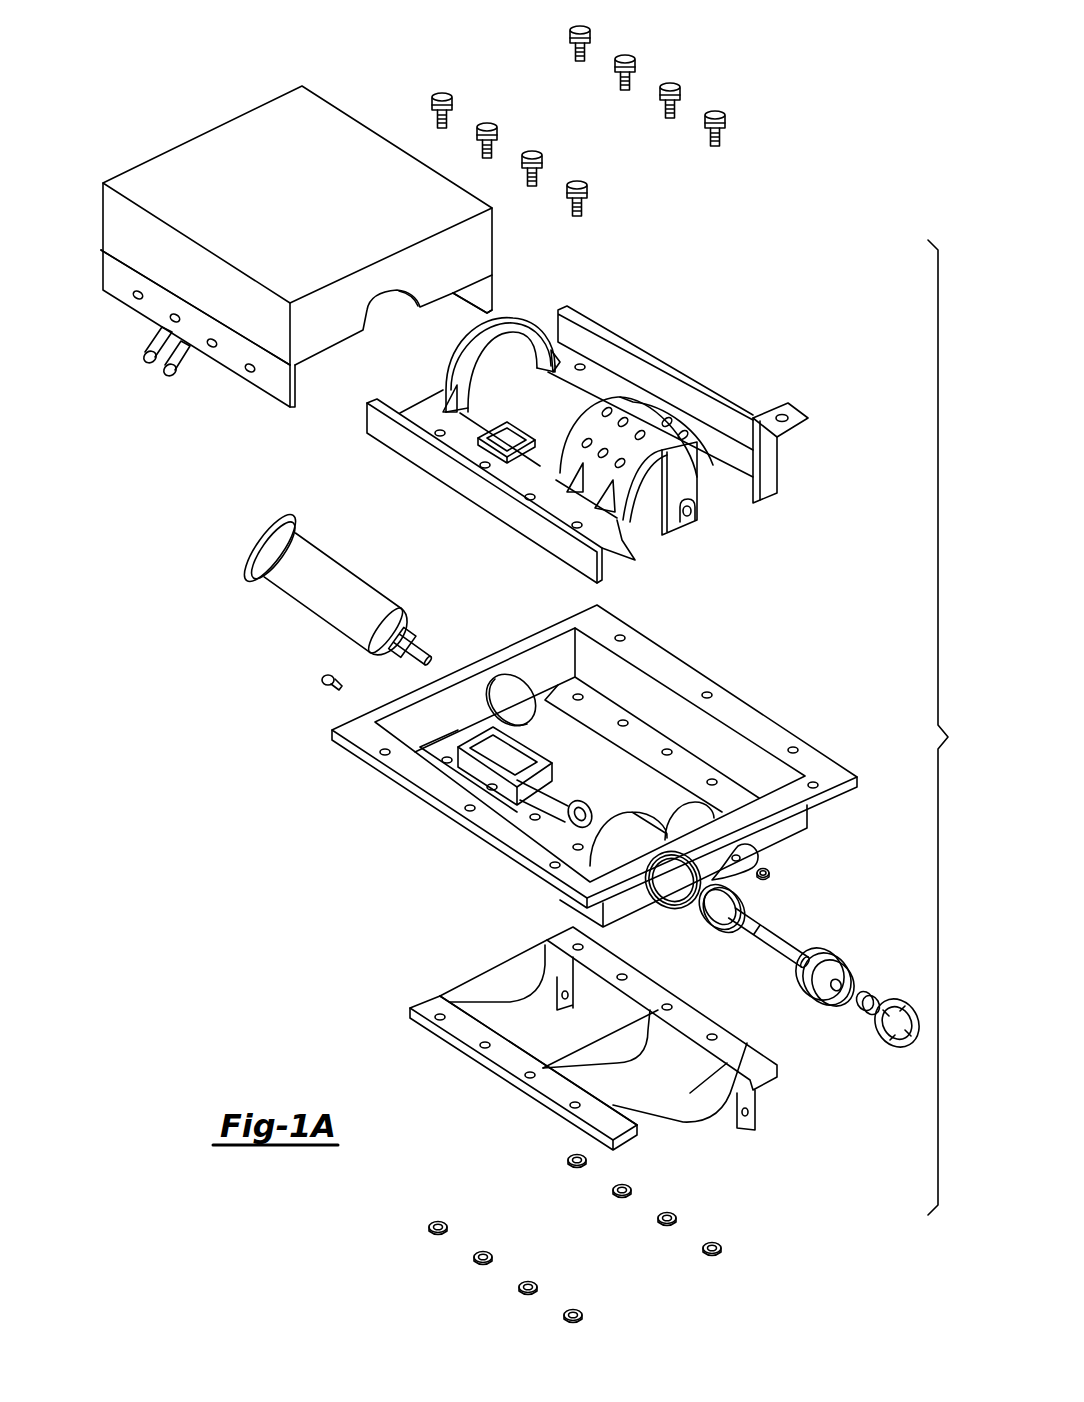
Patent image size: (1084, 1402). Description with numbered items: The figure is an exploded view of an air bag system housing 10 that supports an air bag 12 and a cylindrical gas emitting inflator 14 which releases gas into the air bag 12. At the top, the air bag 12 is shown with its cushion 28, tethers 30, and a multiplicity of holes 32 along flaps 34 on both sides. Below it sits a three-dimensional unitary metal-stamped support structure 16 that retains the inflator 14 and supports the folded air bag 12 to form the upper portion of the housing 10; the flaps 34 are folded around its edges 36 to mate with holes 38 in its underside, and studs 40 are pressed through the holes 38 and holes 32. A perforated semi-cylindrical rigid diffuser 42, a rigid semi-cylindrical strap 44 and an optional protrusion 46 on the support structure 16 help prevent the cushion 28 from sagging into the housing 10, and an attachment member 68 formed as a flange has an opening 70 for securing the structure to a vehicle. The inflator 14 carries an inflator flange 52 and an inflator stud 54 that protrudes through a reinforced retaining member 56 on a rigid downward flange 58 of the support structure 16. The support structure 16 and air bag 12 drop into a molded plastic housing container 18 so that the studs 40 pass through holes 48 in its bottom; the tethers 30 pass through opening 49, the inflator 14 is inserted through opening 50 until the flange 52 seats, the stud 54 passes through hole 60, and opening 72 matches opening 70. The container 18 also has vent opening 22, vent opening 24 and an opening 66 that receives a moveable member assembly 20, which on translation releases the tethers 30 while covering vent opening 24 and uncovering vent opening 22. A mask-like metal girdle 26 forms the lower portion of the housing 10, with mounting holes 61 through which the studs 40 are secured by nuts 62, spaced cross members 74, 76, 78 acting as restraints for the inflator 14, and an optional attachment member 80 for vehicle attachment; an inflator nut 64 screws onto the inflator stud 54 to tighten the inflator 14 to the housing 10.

The air bag system housing 10 is at (287, 973).
The air bag 12 is at (301, 208).
The cylindrical gas emitting inflator 14 is at (336, 577).
The support structure 16 is at (579, 409).
The housing container 18 is at (621, 763).
The moveable member assembly 20 is at (783, 942).
The vent opening 22 is at (550, 797).
The vent opening 24 is at (592, 812).
The girdle 26 is at (624, 1031).
The cushion 28 is at (293, 246).
The tethers 30 is at (170, 378).
The holes 32 is at (136, 300).
The flaps 34 is at (112, 277).
The edges 36 is at (372, 412).
The holes 38 is at (580, 363).
The studs 40 is at (495, 128).
The perforated semi-cylindrical rigid diffuser 42 is at (650, 424).
The rigid semi-cylindrical strap 44 is at (513, 327).
The protrusion 46 is at (513, 425).
The holes 48 is at (715, 782).
The opening 49 is at (527, 757).
The opening 50 is at (517, 683).
The inflator flange 52 is at (252, 536).
The inflator stud 54 is at (427, 643).
The reinforced retaining member 56 is at (690, 524).
The rigid downward flange 58 is at (704, 516).
The hole 60 is at (745, 858).
The mounting holes 61 is at (670, 1004).
The nuts 62 is at (528, 1285).
The inflator nut 64 is at (768, 880).
The opening 66 is at (695, 888).
The attachment member 68 is at (802, 413).
The opening 70 is at (783, 413).
The opening 72 is at (815, 787).
The cross member 74 is at (523, 967).
The cross member 76 is at (568, 1053).
The cross member 78 is at (690, 1093).
The attachment member 80 is at (757, 1121).